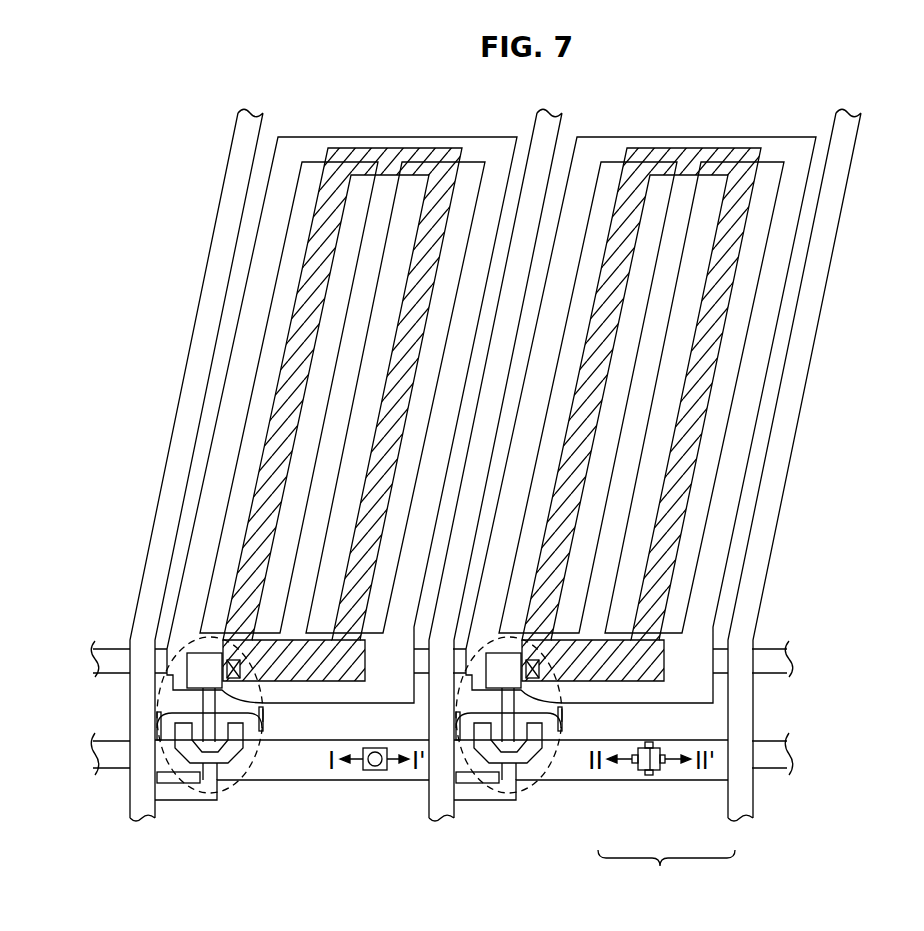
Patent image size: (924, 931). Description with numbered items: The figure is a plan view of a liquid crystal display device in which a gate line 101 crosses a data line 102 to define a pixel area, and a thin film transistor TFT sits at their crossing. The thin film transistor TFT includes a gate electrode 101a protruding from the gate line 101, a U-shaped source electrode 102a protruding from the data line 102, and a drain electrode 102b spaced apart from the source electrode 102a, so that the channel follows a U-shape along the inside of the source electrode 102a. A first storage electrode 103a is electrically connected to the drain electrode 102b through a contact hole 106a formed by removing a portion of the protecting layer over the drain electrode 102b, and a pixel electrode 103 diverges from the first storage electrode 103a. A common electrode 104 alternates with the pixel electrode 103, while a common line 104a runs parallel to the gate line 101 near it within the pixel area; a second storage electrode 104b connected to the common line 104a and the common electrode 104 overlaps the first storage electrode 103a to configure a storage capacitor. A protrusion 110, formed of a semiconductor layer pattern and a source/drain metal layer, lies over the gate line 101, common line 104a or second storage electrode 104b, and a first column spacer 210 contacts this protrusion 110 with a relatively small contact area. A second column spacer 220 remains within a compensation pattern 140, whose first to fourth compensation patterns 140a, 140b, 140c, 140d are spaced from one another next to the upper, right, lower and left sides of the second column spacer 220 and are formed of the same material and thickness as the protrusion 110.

The gate line 101 is at (285, 770).
The gate electrode 101a is at (158, 727).
The data line 102 is at (138, 700).
The U-shaped source electrode 102a is at (241, 787).
The drain electrode 102b is at (264, 717).
The pixel electrode 103 is at (725, 310).
The first storage electrode 103a is at (665, 658).
The common electrode 104 is at (802, 200).
The common line 104a is at (727, 682).
The second storage electrode 104b is at (720, 690).
The contact hole 106a is at (242, 669).
The protrusion 110 is at (368, 771).
The first column spacer 210 is at (385, 771).
The compensation pattern 140 is at (666, 823).
The first compensation pattern 140a is at (641, 772).
The second compensation pattern 140b is at (660, 774).
The third compensation pattern 140c is at (648, 772).
The fourth compensation pattern 140d is at (632, 762).
The second column spacer 220 is at (650, 742).
The thin film transistor TFT is at (203, 800).